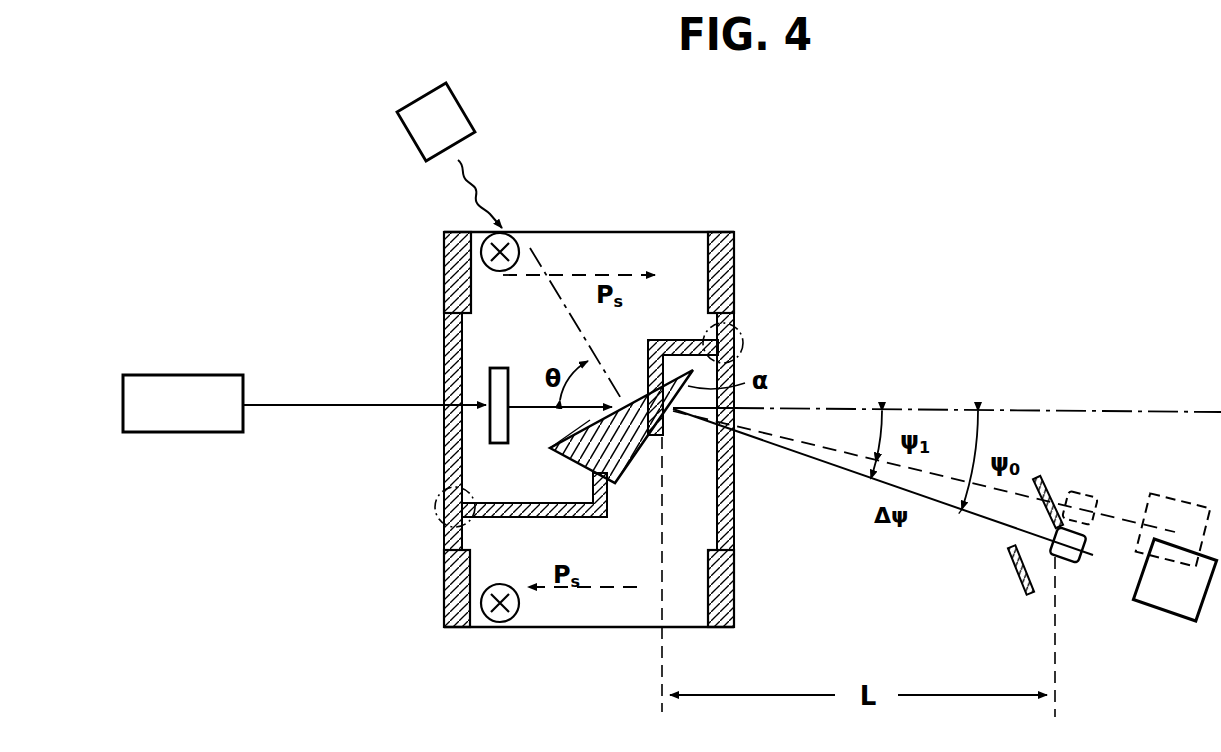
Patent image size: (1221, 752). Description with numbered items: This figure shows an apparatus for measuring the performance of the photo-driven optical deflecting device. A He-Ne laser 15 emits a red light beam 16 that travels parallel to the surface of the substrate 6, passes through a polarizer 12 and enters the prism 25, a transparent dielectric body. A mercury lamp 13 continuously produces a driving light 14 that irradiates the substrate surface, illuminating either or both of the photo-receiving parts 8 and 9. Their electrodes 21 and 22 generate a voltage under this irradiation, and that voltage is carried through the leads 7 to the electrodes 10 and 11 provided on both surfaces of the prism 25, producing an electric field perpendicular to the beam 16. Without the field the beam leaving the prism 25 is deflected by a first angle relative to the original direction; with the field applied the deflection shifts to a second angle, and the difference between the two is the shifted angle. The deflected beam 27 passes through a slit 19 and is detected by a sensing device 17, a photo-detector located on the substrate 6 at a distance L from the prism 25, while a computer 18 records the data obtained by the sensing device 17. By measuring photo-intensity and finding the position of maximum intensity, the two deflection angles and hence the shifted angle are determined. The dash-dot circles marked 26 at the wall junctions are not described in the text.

The substrate 6 is at (626, 603).
The leads 7 is at (460, 363).
The receiving element 8 is at (516, 246).
The receiving element 9 is at (497, 623).
The electrode 10 is at (638, 436).
The electrode 11 is at (627, 473).
The polarizer 12 is at (493, 428).
The mercury lamp 13 is at (423, 135).
The driving light 14 is at (480, 185).
The He-Ne laser 15 is at (203, 416).
The light beam 16 is at (330, 405).
The sensing device 17 is at (1067, 562).
The computer 18 is at (1163, 593).
The slit 19 is at (1058, 477).
The electrode 21 is at (734, 248).
The electrode 22 is at (446, 250).
The prism 25 is at (550, 448).
The seal 26 is at (744, 338).
The beam 27 is at (973, 513).